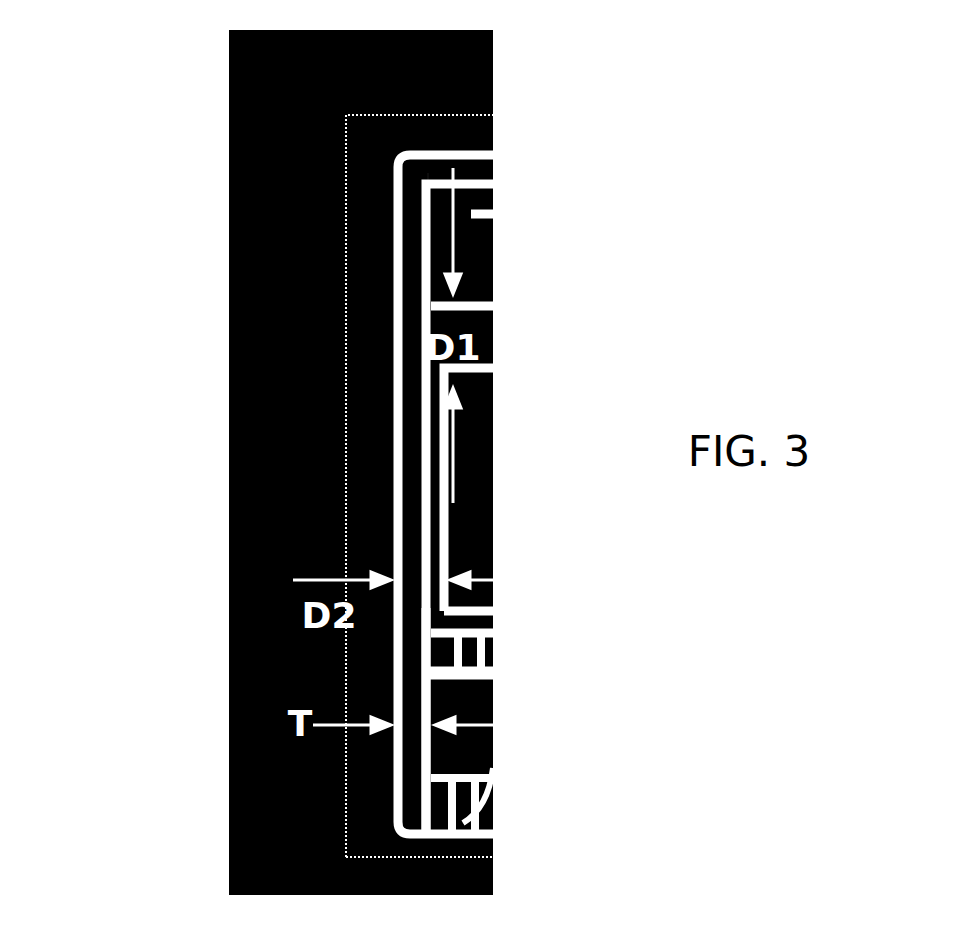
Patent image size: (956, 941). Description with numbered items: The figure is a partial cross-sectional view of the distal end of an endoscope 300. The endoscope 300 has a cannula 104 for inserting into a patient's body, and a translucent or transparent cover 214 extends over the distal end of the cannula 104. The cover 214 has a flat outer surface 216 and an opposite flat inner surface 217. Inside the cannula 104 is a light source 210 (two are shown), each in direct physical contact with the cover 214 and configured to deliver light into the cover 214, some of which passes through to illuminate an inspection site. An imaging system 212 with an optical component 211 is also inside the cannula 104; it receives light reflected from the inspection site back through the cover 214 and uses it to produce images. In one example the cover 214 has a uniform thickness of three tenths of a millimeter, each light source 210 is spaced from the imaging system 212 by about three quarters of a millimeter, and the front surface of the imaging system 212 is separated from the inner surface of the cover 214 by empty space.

The endoscope 300 is at (168, 142).
The cannula 104 is at (440, 150).
The cover 214 is at (400, 195).
The light source 210 is at (485, 249).
The flat outer surface 216 is at (388, 323).
The imaging system 212 is at (485, 470).
The optical component 211 is at (433, 512).
The flat inner surface 217 is at (417, 612).